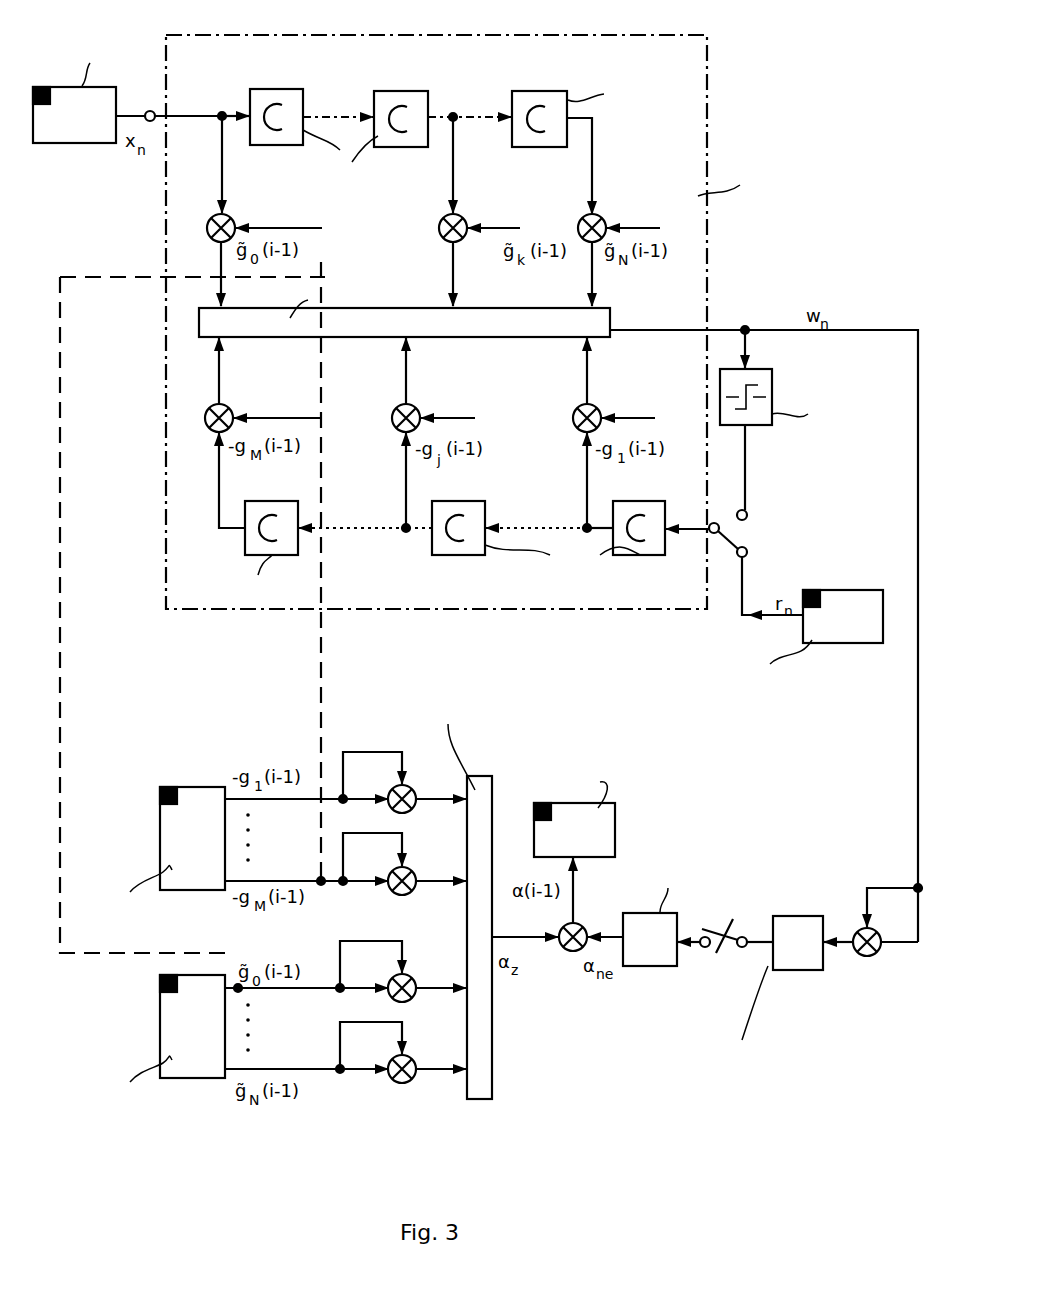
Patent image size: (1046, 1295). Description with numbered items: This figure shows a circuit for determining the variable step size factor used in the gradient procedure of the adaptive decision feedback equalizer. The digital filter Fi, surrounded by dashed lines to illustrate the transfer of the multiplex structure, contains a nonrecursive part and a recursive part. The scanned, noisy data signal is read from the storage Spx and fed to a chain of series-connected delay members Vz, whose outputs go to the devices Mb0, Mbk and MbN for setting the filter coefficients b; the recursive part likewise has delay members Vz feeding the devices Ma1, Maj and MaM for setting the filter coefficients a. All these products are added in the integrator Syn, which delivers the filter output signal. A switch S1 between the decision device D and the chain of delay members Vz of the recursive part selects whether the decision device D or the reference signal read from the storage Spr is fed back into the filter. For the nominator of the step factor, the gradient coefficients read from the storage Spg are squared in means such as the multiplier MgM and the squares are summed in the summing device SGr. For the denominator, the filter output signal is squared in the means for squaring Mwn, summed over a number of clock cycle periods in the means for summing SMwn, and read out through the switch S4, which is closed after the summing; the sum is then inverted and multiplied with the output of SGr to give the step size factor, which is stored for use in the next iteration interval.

The storage for scanned noisy data signal Spx is at (62, 150).
The delay member Vz is at (278, 92).
The device for setting filter coefficient b0 Mb0 is at (226, 215).
The device for setting filter coefficient bk Mbk is at (458, 216).
The device for setting filter coefficient bN MbN is at (598, 216).
The integrator of the filter Syn is at (488, 330).
The device for setting filter coefficient aM MaM is at (226, 407).
The device for setting filter coefficient aj Maj is at (414, 408).
The device for setting filter coefficient a1 Ma1 is at (594, 408).
The filter Fi is at (690, 137).
The decision device D is at (772, 384).
The switch S1 is at (714, 494).
The storage for reference signal Spr is at (830, 632).
The summing device for squared gradient coefficients SGr is at (480, 790).
The storage for gradient coefficients gj Spg is at (170, 840).
The means for squaring gradient coefficient gM MgM is at (400, 895).
The switch S4 is at (725, 919).
The means for summing squared filter output signal SMwn is at (782, 972).
The means for squaring filter output signal Mwn is at (866, 957).